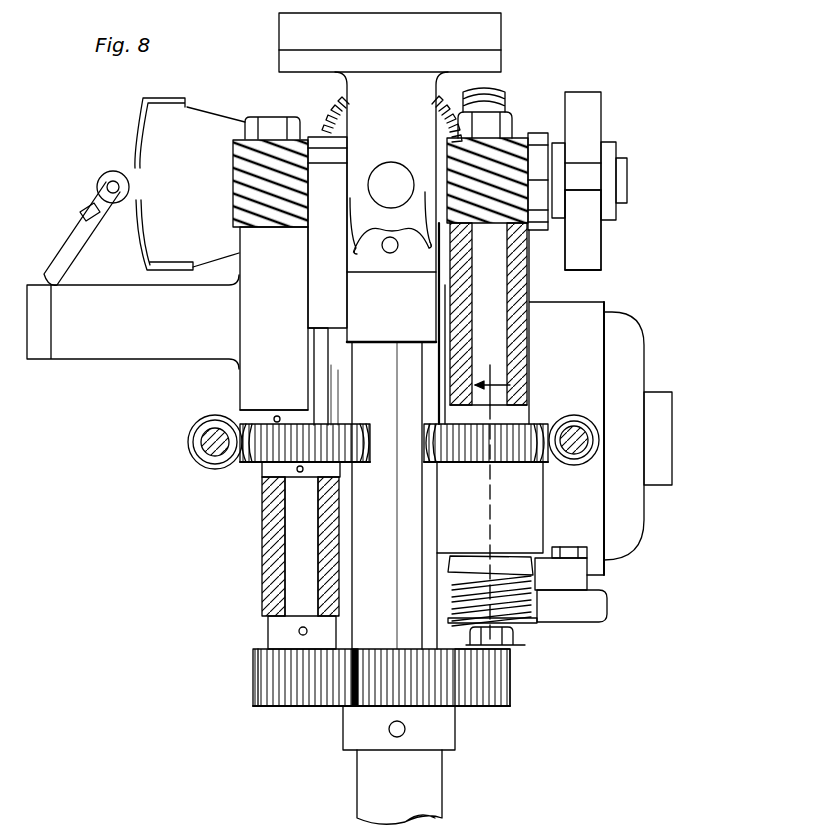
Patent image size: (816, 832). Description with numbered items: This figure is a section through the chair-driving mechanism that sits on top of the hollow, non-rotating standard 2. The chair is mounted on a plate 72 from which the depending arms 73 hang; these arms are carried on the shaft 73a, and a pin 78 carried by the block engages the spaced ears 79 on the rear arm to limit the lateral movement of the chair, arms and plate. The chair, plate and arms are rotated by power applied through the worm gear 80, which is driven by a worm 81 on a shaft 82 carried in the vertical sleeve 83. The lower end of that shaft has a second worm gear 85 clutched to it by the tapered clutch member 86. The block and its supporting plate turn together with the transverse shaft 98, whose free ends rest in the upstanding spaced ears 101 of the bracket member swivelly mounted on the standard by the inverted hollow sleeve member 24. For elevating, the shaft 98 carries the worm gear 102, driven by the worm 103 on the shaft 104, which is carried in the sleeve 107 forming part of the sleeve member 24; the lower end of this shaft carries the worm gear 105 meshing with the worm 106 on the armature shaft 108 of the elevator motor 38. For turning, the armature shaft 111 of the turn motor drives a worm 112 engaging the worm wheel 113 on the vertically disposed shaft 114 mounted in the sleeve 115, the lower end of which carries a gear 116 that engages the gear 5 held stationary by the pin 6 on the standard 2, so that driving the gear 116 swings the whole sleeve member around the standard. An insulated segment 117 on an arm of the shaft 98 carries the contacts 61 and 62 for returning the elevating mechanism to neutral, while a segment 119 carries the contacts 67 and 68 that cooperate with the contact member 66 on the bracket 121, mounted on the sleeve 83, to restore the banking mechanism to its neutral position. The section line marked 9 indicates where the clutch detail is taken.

The non-rotating standard 2 is at (430, 756).
The gear 5 is at (510, 672).
The pin 6 is at (405, 729).
The nut / section line 9 is at (507, 510).
The sleeve member 24 is at (387, 495).
The elevator motor 38 is at (643, 345).
The contact 61 is at (596, 237).
The contact 62 is at (590, 109).
The contact member 66 is at (115, 175).
The contact 67 is at (139, 244).
The contact 68 is at (137, 124).
The plate 72 is at (390, 42).
The depending arms 73 is at (391, 207).
The shaft 73a is at (384, 173).
The pin 78 is at (390, 253).
The spaced ears 79 is at (394, 256).
The worm gear 80 is at (332, 111).
The worm 81 is at (238, 187).
The shaft 82 is at (278, 119).
The vertical sleeve 83 is at (274, 324).
The second worm gear 85 is at (275, 831).
The tapered clutch member 86 is at (520, 559).
The transverse shaft 98 is at (630, 181).
The upstanding spaced ears 101 is at (440, 152).
The worm gear 102 is at (486, 98).
The worm 103 is at (516, 146).
The shaft 104 is at (488, 314).
The worm gear 105 is at (548, 418).
The worm 106 is at (574, 428).
The sleeve 107 is at (530, 306).
The armature shaft 108 is at (570, 454).
The armature shaft 111 is at (210, 430).
The worm 112 is at (201, 466).
The worm wheel 113 is at (300, 432).
The vertically disposed shaft 114 is at (302, 563).
The sleeve 115 is at (262, 533).
The gear 116 is at (253, 676).
The insulated segment 117 is at (594, 262).
The segment 119 is at (200, 118).
The bracket 121 is at (133, 322).